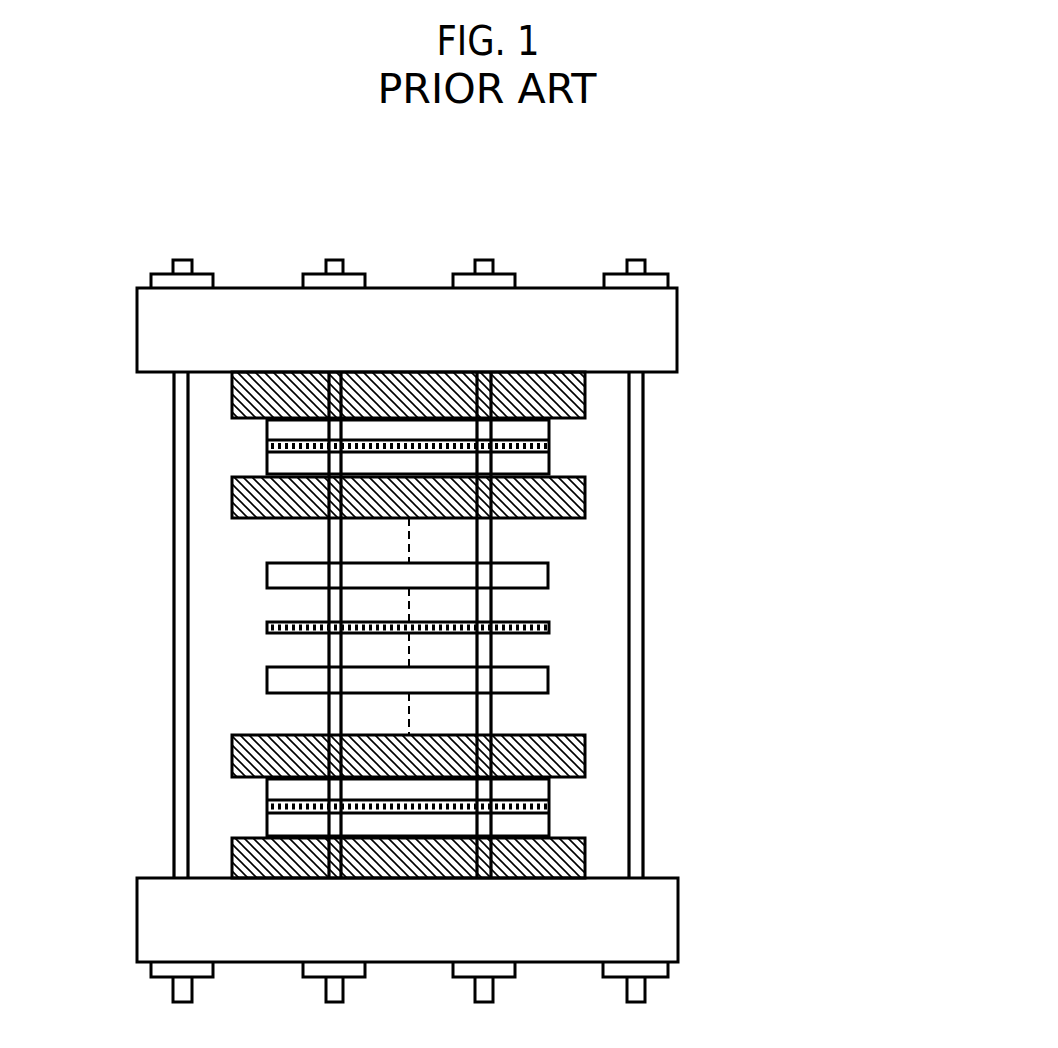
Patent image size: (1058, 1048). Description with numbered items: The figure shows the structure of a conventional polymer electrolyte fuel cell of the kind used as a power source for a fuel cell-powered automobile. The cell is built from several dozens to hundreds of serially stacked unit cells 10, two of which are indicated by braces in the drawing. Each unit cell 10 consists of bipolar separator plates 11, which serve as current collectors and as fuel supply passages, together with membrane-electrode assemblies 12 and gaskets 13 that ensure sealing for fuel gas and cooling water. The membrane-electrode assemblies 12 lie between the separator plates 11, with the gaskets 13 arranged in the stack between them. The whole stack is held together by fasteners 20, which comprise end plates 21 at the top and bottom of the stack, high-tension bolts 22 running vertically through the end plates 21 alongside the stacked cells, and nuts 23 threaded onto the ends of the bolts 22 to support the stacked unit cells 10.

The unit cell 10 is at (419, 625).
The bipolar separator plate 11 is at (585, 405).
The membrane-electrode assembly 12 is at (550, 447).
The gasket 13 is at (267, 578).
The fastener 20 is at (548, 621).
The end plate 21 is at (677, 330).
The high-tension bolt 22 is at (640, 395).
The nut 23 is at (667, 276).